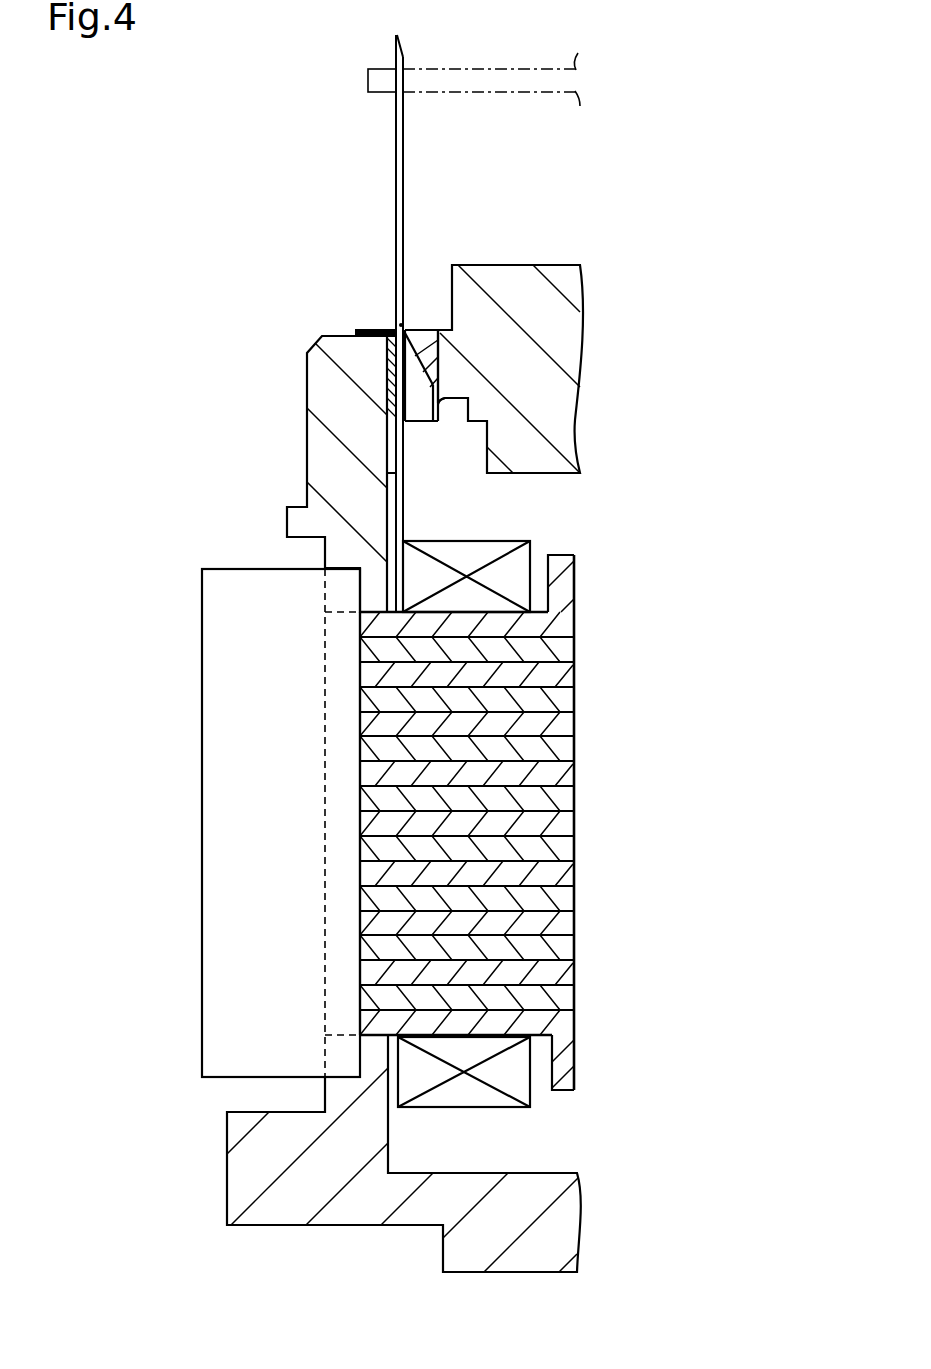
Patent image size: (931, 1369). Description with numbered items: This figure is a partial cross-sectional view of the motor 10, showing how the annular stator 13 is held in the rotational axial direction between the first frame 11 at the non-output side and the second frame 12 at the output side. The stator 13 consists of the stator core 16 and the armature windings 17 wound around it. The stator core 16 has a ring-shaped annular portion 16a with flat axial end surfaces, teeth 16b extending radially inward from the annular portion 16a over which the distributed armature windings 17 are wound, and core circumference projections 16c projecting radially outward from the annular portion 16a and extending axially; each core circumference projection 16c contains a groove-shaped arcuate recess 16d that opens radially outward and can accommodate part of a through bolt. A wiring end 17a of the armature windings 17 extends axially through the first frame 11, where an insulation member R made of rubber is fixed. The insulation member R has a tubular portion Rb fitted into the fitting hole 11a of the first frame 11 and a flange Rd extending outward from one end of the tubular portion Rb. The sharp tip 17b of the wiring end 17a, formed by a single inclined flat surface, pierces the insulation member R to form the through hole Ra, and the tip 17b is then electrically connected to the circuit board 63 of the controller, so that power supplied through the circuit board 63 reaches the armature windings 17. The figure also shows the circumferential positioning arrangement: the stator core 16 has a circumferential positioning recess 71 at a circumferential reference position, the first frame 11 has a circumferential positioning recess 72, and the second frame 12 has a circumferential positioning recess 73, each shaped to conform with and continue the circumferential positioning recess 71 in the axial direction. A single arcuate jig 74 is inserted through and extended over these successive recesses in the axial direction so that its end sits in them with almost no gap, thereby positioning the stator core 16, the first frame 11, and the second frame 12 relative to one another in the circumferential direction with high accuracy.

The motor 10 is at (206, 286).
The first frame 11 is at (550, 265).
The fitting hole 11a is at (387, 393).
The second frame 12 is at (530, 1173).
The stator 13 is at (350, 848).
The stator core 16 is at (358, 820).
The annular portion 16a is at (358, 920).
The teeth 16b is at (556, 722).
The core circumference projections 16c is at (323, 783).
The arcuate recess 16d is at (358, 745).
The armature windings 17 is at (495, 541).
The wiring end 17a is at (387, 365).
The tip 17b is at (402, 47).
The circuit board 63 is at (488, 93).
The circumferential positioning recess 71 is at (358, 695).
The circumferential positioning recess 72 is at (358, 588).
The circumferential positioning recess 73 is at (358, 1050).
The jig 74 is at (202, 598).
The insulation member R is at (423, 330).
The through hole Ra is at (400, 323).
The tubular portion Rb is at (387, 408).
The flange Rd is at (372, 325).